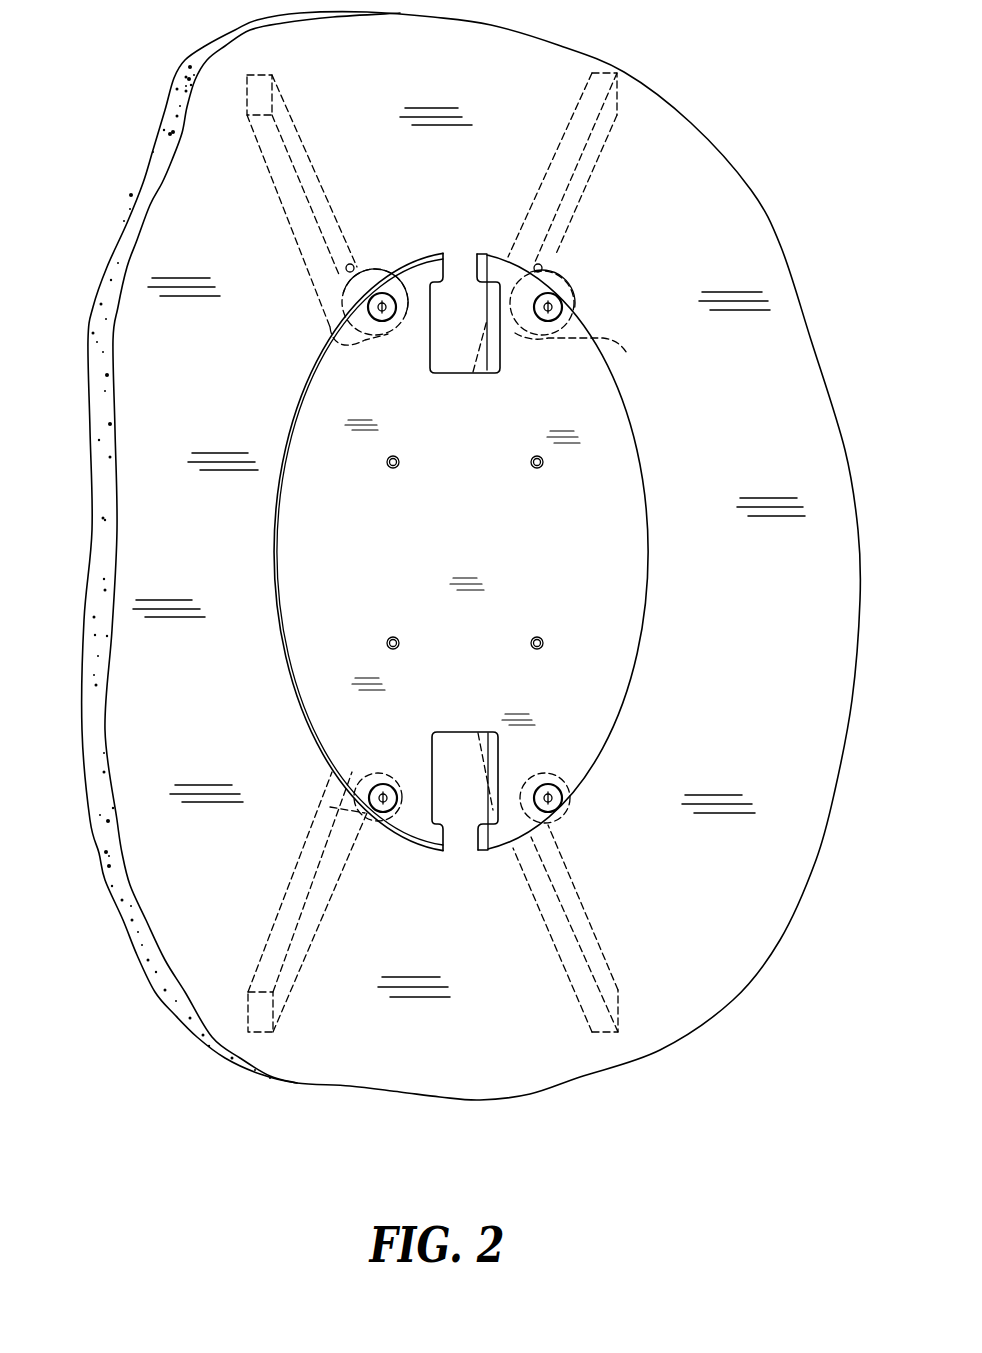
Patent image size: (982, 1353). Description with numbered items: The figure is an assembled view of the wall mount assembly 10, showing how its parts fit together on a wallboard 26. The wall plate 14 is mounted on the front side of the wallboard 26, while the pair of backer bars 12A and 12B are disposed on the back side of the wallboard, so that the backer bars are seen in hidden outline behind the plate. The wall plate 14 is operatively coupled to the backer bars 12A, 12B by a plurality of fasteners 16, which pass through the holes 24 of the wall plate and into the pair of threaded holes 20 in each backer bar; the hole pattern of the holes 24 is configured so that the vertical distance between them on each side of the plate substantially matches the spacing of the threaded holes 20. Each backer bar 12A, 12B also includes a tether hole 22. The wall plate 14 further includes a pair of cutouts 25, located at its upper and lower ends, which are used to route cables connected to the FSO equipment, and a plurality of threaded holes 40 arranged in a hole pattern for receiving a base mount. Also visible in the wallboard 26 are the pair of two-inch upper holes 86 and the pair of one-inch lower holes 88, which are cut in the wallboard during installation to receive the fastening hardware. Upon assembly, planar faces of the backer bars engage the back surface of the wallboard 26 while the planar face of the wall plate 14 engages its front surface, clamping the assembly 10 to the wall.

The wall mount assembly 10 is at (471, 556).
The backer bar 12A is at (290, 128).
The backer bar 12B is at (598, 157).
The wall plate 14 is at (484, 555).
The fasteners 16 is at (515, 547).
The holes 24 is at (392, 300).
The threaded holes 20 is at (312, 347).
The tether hole 22 is at (355, 262).
The cutouts 25 is at (458, 288).
The wallboard 26 is at (774, 235).
The threaded holes 40 is at (398, 467).
The upper holes 86 is at (384, 337).
The lower holes 88 is at (382, 774).